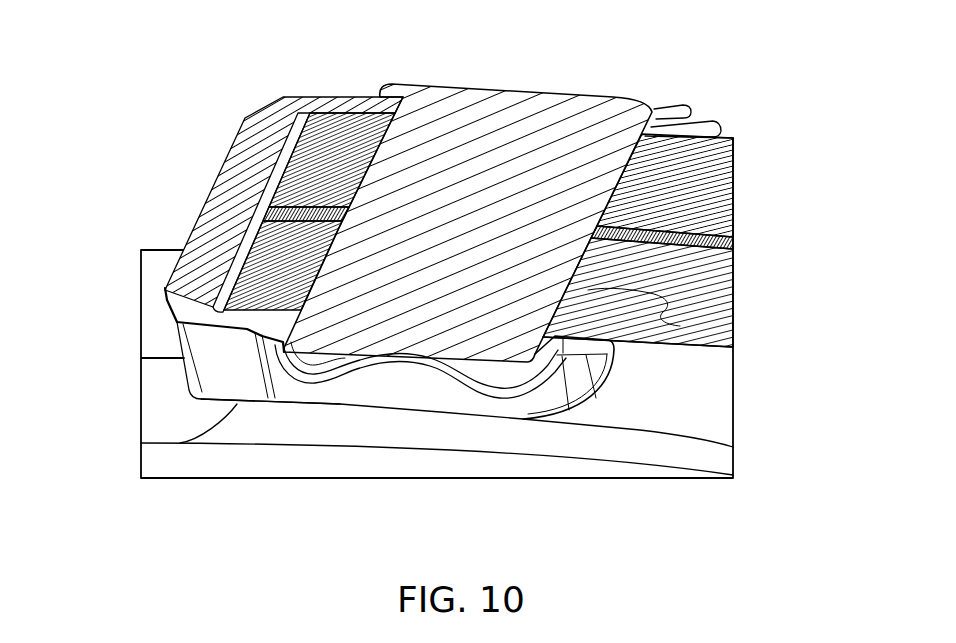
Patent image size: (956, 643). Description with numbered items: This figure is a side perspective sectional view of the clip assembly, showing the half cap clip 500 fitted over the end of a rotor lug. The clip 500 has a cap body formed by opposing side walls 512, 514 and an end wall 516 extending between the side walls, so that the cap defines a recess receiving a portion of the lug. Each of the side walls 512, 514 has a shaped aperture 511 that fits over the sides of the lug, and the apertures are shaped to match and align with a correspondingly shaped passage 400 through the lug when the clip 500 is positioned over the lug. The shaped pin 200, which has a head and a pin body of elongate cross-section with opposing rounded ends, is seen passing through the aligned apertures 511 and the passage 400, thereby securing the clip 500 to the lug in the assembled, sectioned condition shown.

The shaped pin 200 is at (517, 125).
The shaped passage 400 is at (738, 328).
The half cap clip 500 is at (337, 276).
The shaped aperture 511 is at (349, 375).
The side wall 512 is at (360, 113).
The side wall 514 is at (249, 395).
The end wall 516 is at (230, 186).